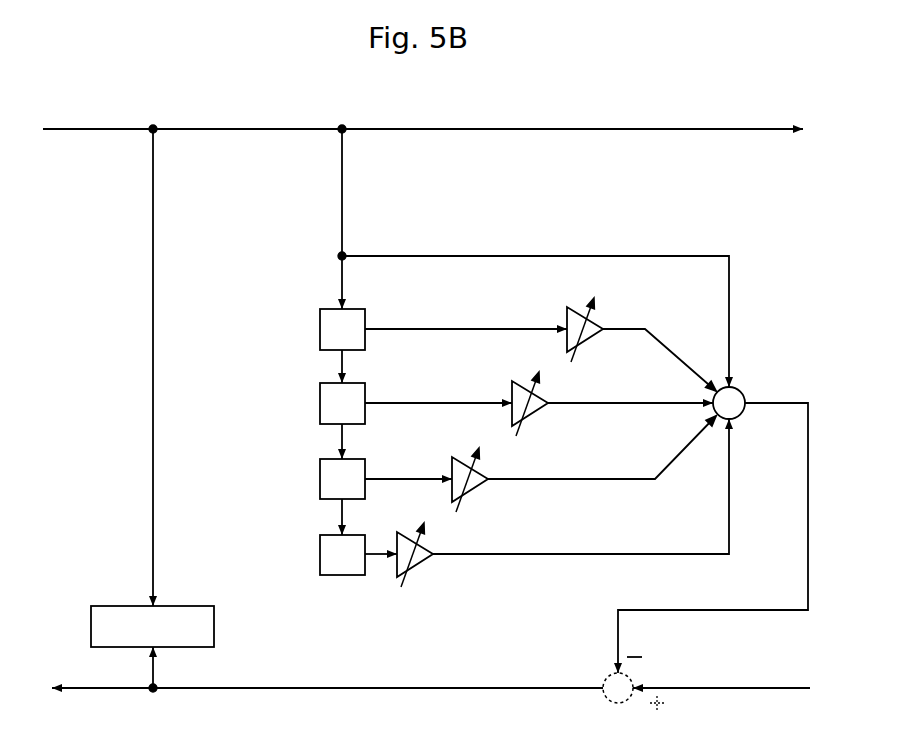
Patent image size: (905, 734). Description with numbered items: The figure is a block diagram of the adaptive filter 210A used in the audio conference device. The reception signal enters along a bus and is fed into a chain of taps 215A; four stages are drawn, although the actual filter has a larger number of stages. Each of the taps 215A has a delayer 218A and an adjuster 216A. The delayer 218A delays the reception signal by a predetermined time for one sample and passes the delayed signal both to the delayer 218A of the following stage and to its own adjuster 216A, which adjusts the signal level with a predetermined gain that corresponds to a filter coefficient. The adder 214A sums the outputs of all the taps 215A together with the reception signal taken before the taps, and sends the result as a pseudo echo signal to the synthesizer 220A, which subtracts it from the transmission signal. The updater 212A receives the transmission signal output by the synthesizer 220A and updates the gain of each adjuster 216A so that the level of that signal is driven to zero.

The adaptive filter 210A is at (625, 207).
The updater 212A is at (205, 605).
The adder 214A is at (741, 392).
The taps 215A is at (268, 374).
The adjuster 216A is at (539, 439).
The delayer 218A is at (320, 311).
The synthesizer 220A is at (632, 680).